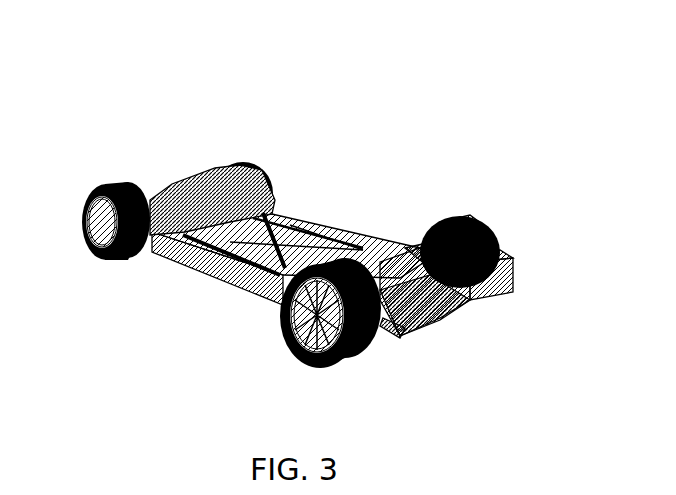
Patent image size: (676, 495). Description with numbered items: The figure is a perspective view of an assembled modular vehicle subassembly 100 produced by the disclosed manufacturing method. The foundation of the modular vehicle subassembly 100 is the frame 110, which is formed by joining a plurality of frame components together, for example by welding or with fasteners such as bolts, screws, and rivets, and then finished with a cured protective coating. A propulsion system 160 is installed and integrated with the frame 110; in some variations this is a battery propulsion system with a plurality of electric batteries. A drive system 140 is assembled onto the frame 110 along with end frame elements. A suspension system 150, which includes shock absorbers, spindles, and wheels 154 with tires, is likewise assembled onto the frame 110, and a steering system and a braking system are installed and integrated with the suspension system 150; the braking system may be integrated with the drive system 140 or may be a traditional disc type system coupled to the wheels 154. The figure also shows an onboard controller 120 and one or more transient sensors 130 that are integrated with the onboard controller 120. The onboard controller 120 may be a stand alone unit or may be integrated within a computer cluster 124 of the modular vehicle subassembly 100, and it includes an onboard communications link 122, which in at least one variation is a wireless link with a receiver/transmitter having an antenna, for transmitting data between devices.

The modular vehicle subassembly 100 is at (462, 86).
The frame 110 is at (172, 268).
The onboard controller 120 is at (412, 243).
The onboard communications link 122 is at (432, 228).
The computer cluster 124 is at (463, 218).
The transient sensors 130 is at (158, 185).
The drive system 140 is at (477, 216).
The suspension system 150 is at (395, 325).
The wheels 154 is at (112, 182).
The propulsion system 160 is at (307, 228).